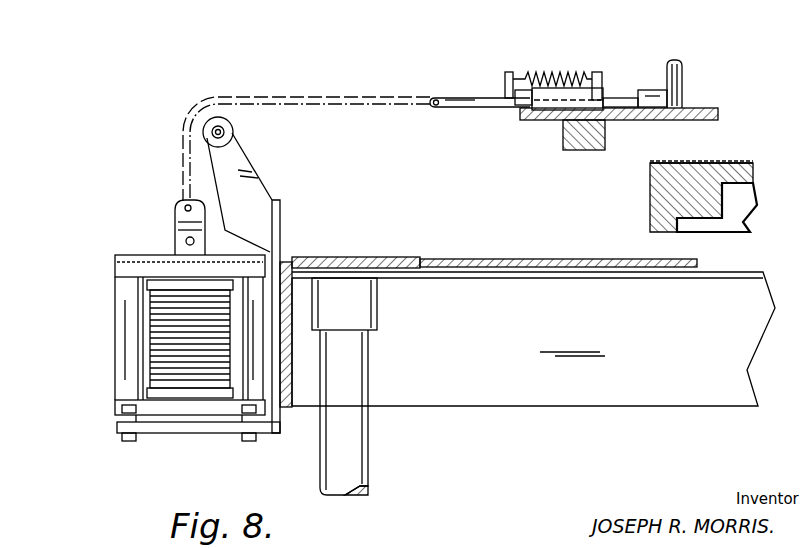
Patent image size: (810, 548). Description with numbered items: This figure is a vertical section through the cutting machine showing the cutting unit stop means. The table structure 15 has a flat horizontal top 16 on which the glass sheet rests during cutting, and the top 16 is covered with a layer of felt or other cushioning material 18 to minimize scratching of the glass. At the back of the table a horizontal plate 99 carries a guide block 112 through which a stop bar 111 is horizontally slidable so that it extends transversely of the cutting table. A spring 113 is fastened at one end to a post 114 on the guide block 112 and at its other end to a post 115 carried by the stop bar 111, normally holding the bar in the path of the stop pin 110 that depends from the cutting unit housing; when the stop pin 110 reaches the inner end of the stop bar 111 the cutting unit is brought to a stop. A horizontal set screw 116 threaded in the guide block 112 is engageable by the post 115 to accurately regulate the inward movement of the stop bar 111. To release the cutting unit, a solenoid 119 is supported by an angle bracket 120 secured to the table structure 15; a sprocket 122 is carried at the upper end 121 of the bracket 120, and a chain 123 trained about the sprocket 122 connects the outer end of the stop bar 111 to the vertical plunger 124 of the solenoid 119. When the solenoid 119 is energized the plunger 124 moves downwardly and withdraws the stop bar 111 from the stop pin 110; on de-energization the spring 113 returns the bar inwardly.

The table structure 15 is at (522, 397).
The flat horizontal top 16 is at (665, 190).
The layer of felt or other cushioning material 18 is at (714, 162).
The horizontal plate 99 is at (634, 121).
The stop pin 110 is at (682, 72).
The stop bar 111 is at (631, 83).
The guide block 112 is at (546, 110).
The spring 113 is at (562, 63).
The post 114 is at (606, 63).
The post 115 is at (510, 72).
The horizontal set screw 116 is at (522, 101).
The solenoid 119 is at (165, 342).
The angle bracket 120 is at (180, 433).
The upper end of bracket 121 is at (264, 180).
The sprocket 122 is at (252, 120).
The chain 123 is at (388, 96).
The vertical plunger 124 is at (178, 222).